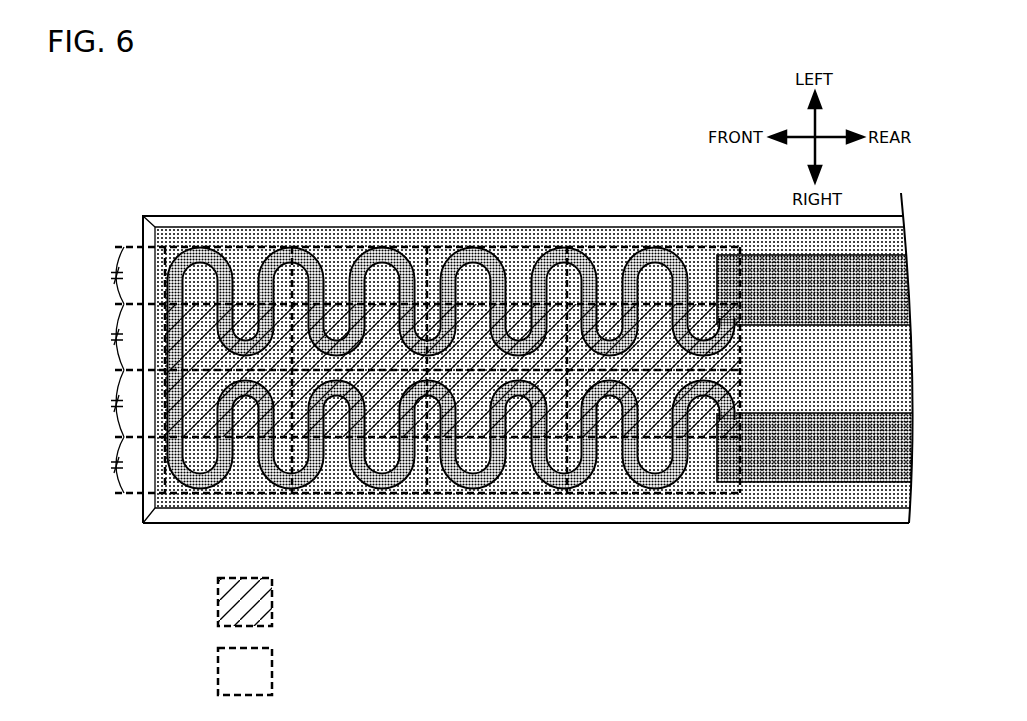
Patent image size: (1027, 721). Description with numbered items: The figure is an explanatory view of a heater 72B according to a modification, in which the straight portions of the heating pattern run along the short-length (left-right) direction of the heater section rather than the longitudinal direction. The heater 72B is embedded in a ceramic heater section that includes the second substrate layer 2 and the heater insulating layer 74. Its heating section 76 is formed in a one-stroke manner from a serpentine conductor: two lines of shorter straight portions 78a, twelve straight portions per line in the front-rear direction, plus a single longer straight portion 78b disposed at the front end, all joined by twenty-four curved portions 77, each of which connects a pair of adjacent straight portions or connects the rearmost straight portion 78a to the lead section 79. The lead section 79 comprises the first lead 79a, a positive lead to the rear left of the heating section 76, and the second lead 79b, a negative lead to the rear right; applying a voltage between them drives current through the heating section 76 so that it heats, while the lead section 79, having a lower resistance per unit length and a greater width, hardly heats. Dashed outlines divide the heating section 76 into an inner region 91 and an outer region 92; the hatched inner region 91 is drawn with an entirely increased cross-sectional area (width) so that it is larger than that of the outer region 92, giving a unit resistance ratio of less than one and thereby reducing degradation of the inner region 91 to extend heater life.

The second substrate layer 2 is at (149, 525).
The heater insulating layer 74 is at (183, 500).
The heater 72B is at (492, 428).
The heating section 76 is at (399, 407).
The curved portion 77 is at (188, 249).
The straight portion 78a is at (625, 305).
The straight portion 78b is at (165, 343).
The lead section 79 is at (815, 458).
The first lead 79a is at (787, 323).
The second lead 79b is at (813, 425).
The inner region 91 is at (452, 465).
The outer region 92 is at (425, 471).